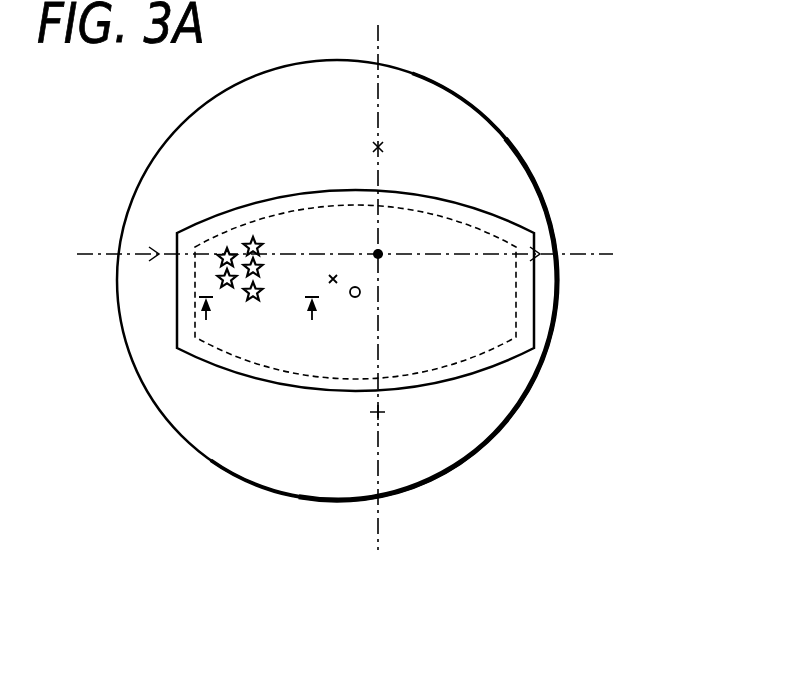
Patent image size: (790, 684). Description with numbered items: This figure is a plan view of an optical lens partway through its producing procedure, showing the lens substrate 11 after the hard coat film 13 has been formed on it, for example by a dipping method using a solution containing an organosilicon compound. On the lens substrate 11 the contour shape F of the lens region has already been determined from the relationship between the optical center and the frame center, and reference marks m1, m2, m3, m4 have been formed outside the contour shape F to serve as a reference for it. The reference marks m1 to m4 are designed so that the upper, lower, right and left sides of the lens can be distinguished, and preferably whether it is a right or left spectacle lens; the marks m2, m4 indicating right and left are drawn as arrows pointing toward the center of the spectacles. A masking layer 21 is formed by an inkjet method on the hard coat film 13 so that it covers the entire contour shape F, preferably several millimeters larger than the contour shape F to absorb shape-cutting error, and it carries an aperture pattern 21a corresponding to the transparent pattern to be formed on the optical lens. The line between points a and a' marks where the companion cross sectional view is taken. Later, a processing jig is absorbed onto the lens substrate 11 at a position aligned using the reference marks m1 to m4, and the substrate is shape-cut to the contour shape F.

The lens substrate 11 is at (503, 428).
The hard coat film 13 is at (384, 286).
The masking layer 21 is at (507, 219).
The aperture pattern 21a is at (223, 250).
The contour shape F is at (517, 317).
The reference mark m1 is at (382, 146).
The reference mark m2 is at (538, 250).
The reference mark m3 is at (380, 413).
The reference mark m4 is at (157, 257).
The line a-a' a is at (208, 321).
The line a- a' is at (313, 328).